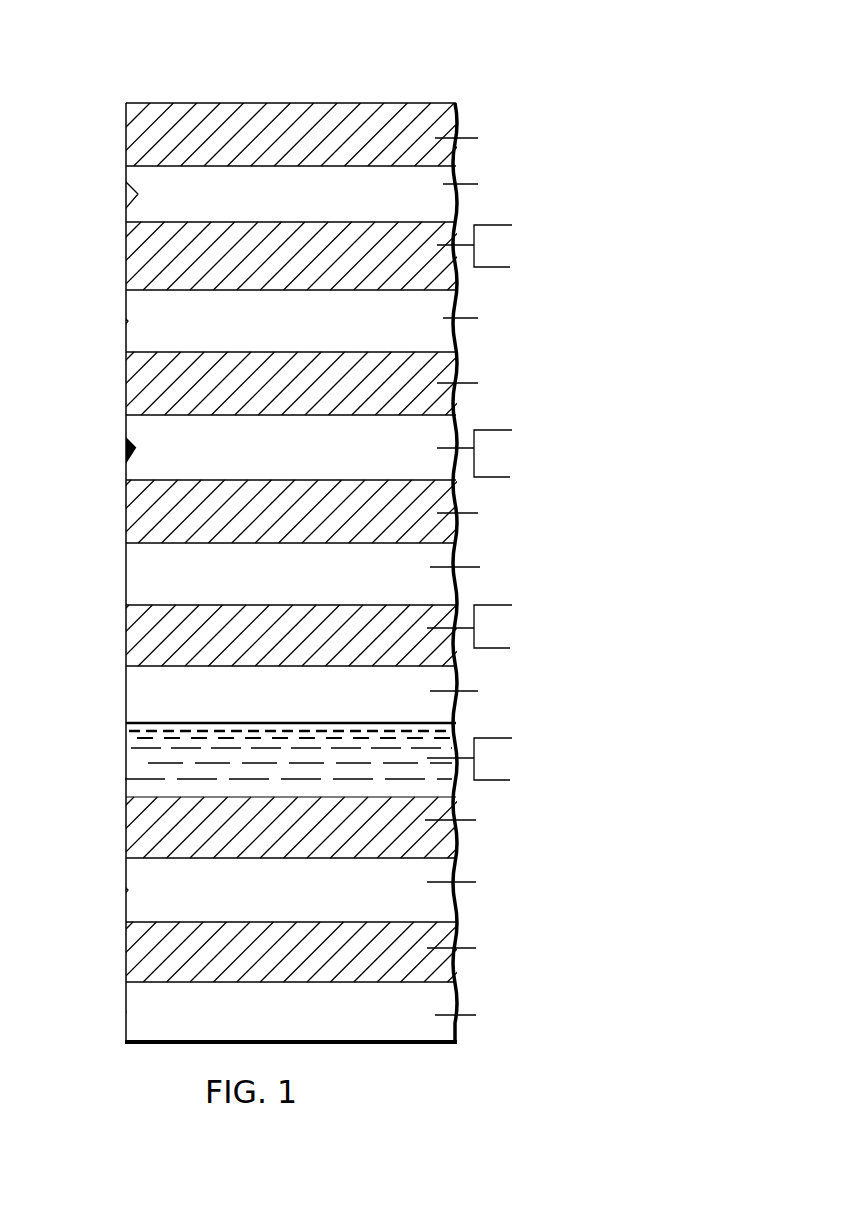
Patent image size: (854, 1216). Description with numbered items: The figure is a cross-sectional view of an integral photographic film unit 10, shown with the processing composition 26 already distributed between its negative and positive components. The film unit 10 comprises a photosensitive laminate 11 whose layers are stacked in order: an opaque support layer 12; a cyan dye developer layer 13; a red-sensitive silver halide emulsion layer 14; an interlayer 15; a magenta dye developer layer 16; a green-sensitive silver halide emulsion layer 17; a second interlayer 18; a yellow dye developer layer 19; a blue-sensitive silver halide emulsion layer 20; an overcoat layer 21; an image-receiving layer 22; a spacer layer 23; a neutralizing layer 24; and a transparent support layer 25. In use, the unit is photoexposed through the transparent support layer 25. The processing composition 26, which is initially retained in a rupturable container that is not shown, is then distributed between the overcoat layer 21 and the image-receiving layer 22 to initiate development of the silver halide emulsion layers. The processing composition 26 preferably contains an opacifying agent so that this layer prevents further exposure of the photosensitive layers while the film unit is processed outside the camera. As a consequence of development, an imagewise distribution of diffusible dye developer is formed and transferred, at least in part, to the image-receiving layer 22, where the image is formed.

The film unit 10 is at (286, 67).
The photosensitive laminate 11 is at (94, 1047).
The opaque support layer 12 is at (167, 128).
The cyan dye developer layer 13 is at (148, 192).
The red-sensitive silver halide emulsion layer 14 is at (143, 253).
The interlayer 15 is at (148, 318).
The magenta dye developer layer 16 is at (147, 382).
The green-sensitive silver halide emulsion layer 17 is at (148, 447).
The interlayer 18 is at (145, 505).
The yellow dye developer layer 19 is at (150, 574).
The blue-sensitive silver halide emulsion layer 20 is at (150, 635).
The overcoat layer 21 is at (148, 697).
The image-receiving layer 22 is at (143, 822).
The spacer layer 23 is at (150, 890).
The neutralizing layer 24 is at (150, 950).
The transparent support layer 25 is at (140, 1017).
The processing composition 26 is at (145, 763).